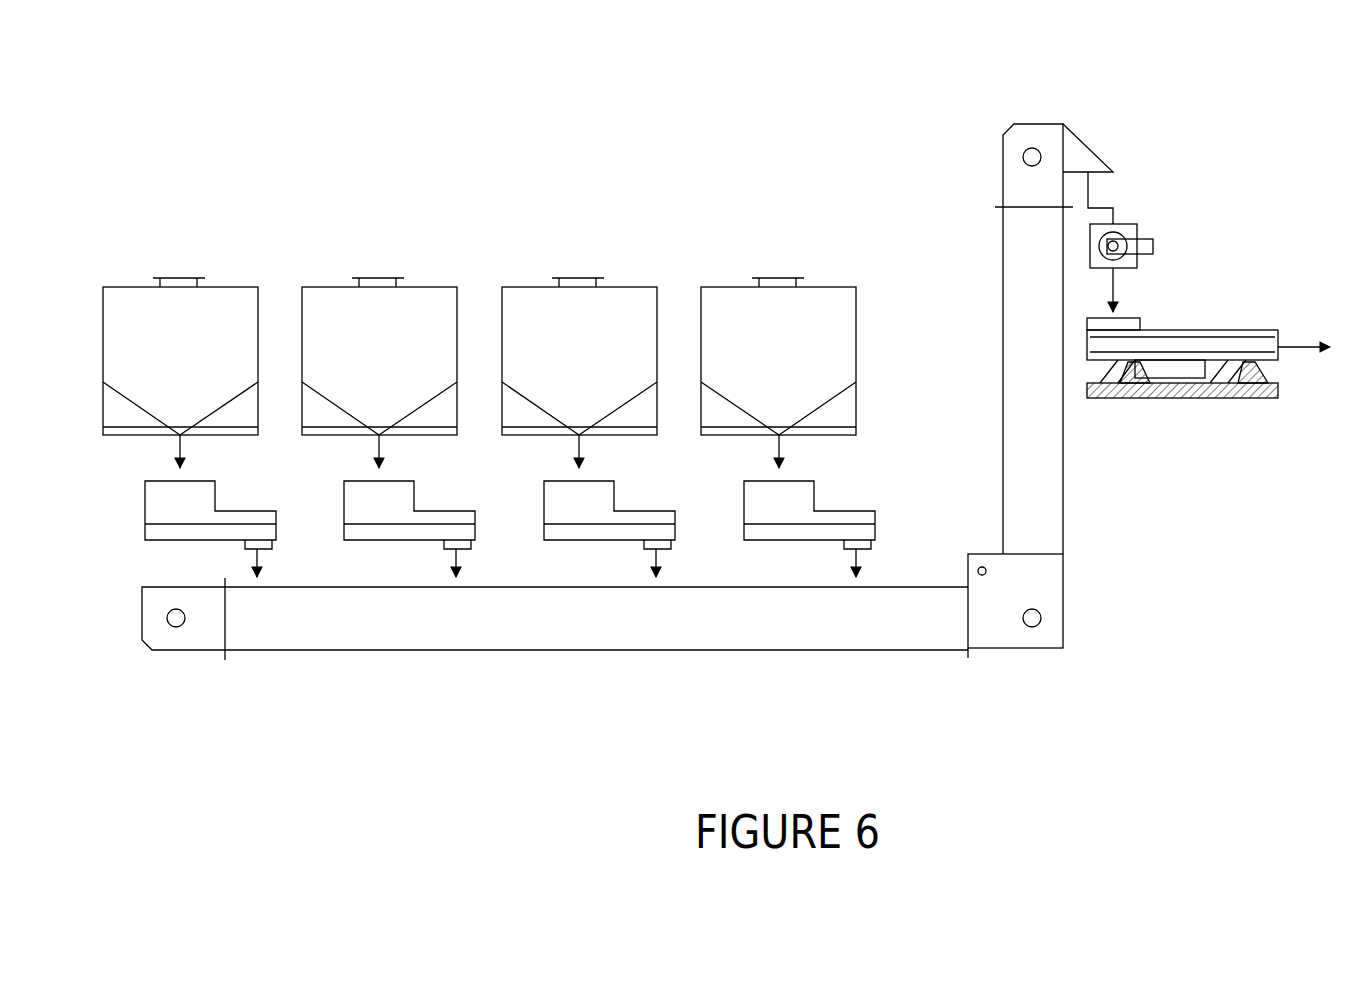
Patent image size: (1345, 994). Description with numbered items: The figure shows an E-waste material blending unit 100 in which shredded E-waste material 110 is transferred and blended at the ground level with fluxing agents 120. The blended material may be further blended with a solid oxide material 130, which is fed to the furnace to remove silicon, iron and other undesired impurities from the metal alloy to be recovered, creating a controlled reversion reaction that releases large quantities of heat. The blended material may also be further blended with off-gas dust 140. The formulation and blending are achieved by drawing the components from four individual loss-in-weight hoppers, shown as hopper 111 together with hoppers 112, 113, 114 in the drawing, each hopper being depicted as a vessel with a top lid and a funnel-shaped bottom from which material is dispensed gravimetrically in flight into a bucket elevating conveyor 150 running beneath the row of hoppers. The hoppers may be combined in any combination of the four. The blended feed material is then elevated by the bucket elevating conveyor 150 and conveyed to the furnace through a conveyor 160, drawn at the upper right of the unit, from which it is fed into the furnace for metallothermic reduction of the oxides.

The E-waste material blending unit 100 is at (830, 155).
The E-waste material 110 is at (143, 163).
The loss-in-weight hopper 111 is at (180, 272).
The fluxing agents 120 is at (342, 163).
The second hopper 112 is at (379, 272).
The off-gas dust 140 is at (542, 163).
The fourth hopper 114 is at (579, 272).
The solid oxide material 130 is at (742, 163).
The third hopper 113 is at (779, 272).
The bucket elevating conveyor 150 is at (418, 657).
The conveyor 160 is at (1198, 310).